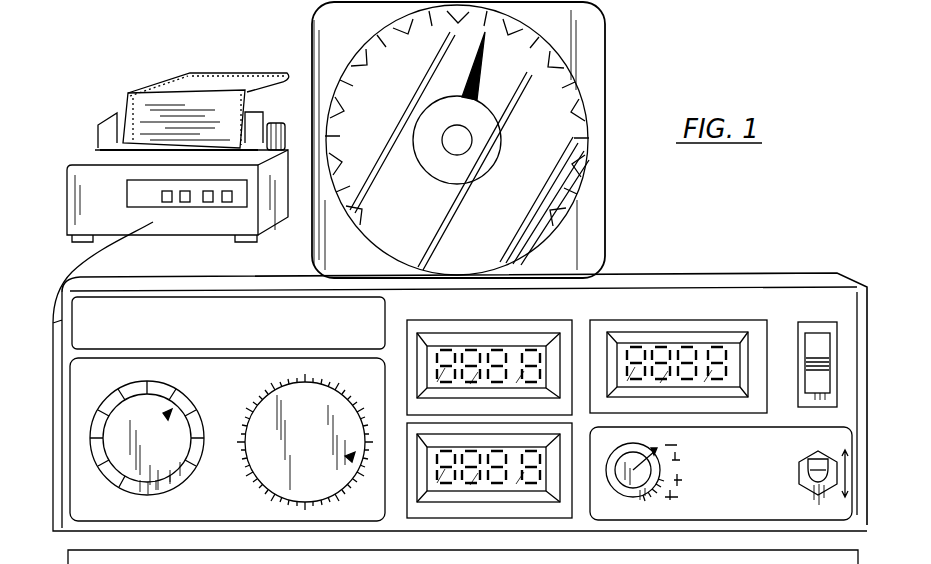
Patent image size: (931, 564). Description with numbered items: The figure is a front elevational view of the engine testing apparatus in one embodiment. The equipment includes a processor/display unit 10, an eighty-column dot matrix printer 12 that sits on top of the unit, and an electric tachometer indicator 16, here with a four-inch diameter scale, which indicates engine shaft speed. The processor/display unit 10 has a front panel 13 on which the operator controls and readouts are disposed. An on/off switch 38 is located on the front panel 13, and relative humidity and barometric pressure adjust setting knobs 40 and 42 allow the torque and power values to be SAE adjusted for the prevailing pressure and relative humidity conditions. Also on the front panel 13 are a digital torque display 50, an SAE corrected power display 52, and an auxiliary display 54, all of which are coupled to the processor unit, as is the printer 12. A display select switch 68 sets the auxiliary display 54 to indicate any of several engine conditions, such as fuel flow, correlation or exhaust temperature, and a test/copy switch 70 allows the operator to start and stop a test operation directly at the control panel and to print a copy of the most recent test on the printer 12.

The processor/display unit 10 is at (260, 283).
The 80-column dot matrix printer 12 is at (92, 149).
The front panel 13 is at (178, 310).
The electric tachometer indicator 16 is at (600, 62).
The on/off switch 38 is at (820, 353).
The relative humidity adjust setting knob 40 is at (170, 410).
The barometric pressure adjust setting knob 42 is at (243, 468).
The digital torque display 50 is at (417, 333).
The SAE corrected power display 52 is at (778, 313).
The auxiliary display 54 is at (417, 505).
The display select switch 68 is at (630, 448).
The test/copy switch 70 is at (800, 453).